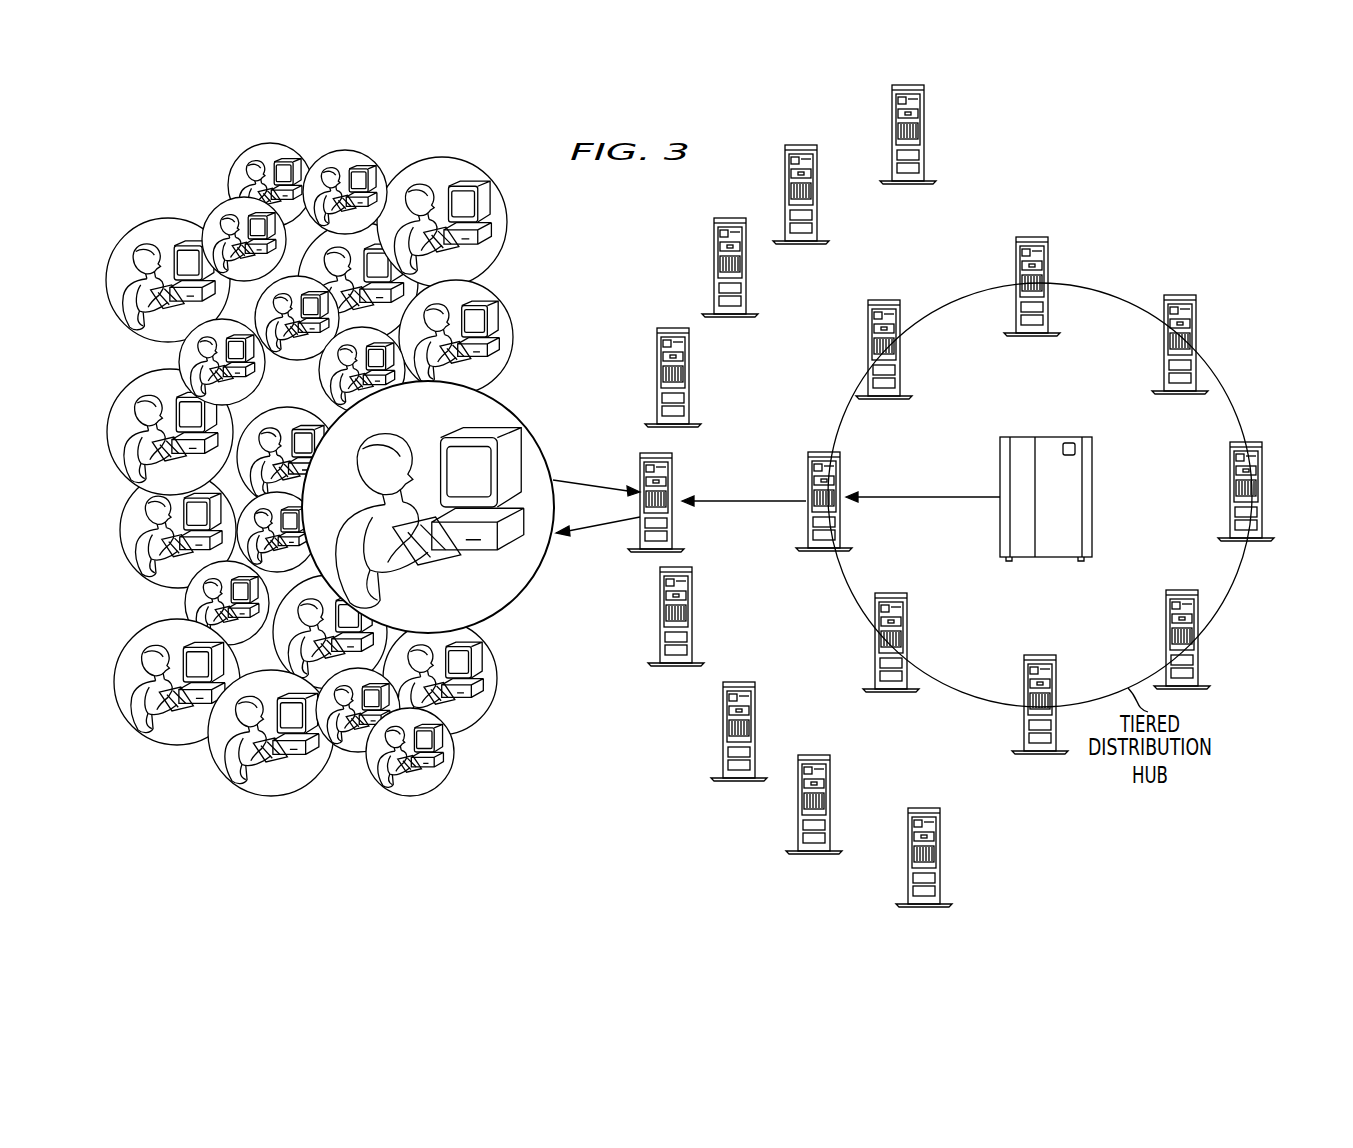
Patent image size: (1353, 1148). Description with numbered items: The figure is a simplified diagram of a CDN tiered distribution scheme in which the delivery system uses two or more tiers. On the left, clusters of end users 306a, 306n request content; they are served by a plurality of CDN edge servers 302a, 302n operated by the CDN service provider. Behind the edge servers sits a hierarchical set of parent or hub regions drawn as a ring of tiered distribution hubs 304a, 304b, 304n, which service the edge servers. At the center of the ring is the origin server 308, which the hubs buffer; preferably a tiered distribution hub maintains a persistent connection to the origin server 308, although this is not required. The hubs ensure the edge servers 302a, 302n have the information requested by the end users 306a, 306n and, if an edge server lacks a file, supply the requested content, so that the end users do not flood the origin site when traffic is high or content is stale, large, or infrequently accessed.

The CDN edge server 302a is at (930, 141).
The CDN edge server 302n is at (943, 858).
The tiered distribution hub 304a is at (1034, 237).
The tiered distribution hub 304n is at (885, 299).
The tiered distribution hub 304b is at (1184, 295).
The end users 306a is at (250, 797).
The end users 306n is at (489, 706).
The origin server 308 is at (1050, 437).